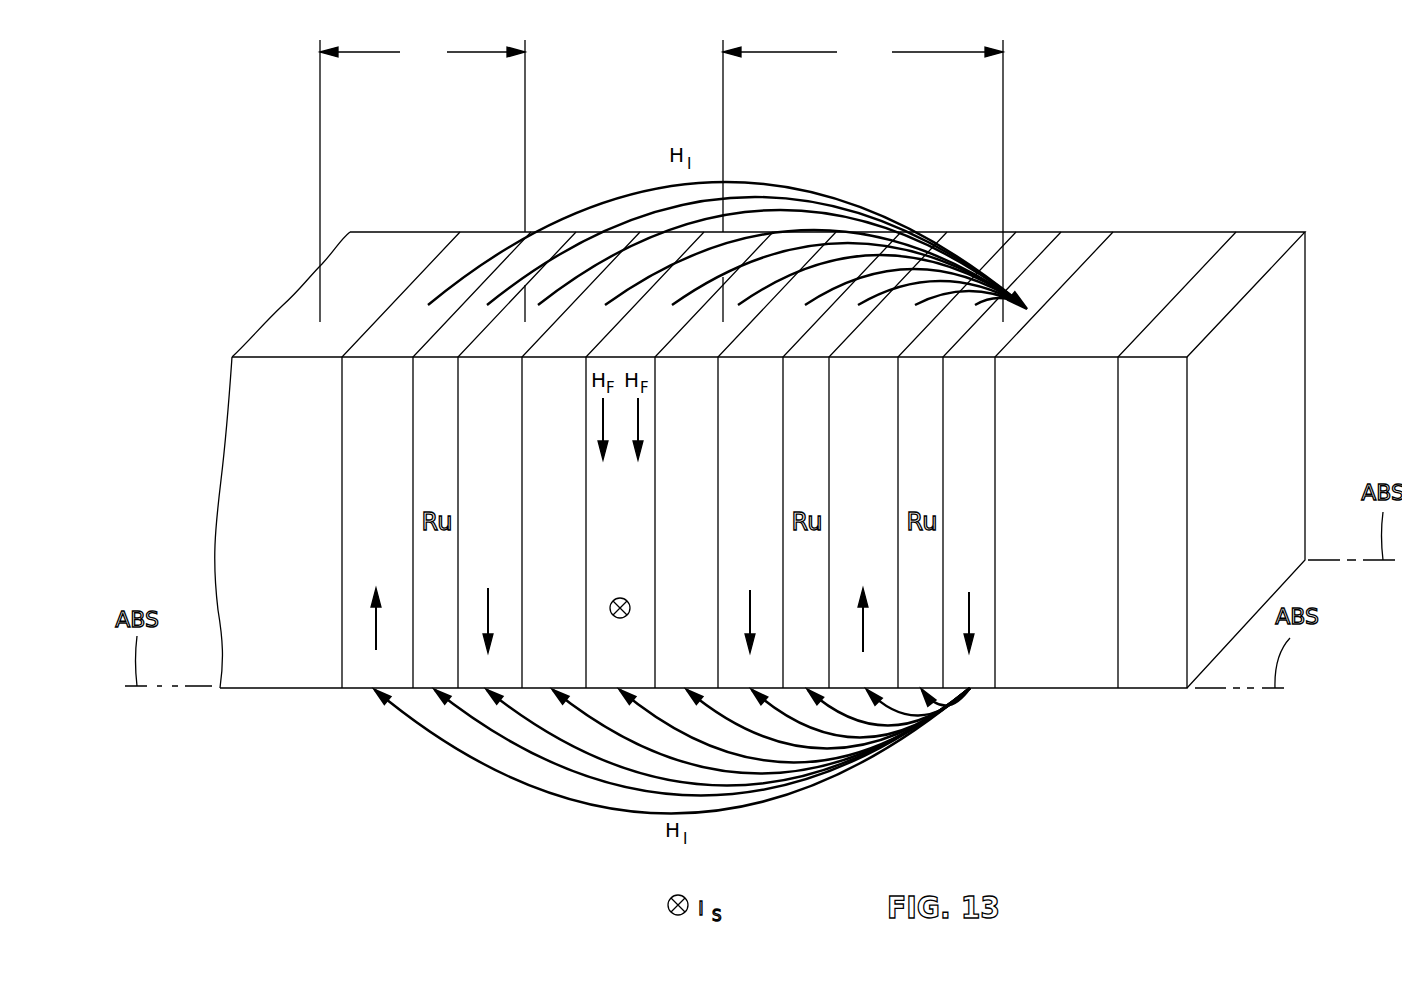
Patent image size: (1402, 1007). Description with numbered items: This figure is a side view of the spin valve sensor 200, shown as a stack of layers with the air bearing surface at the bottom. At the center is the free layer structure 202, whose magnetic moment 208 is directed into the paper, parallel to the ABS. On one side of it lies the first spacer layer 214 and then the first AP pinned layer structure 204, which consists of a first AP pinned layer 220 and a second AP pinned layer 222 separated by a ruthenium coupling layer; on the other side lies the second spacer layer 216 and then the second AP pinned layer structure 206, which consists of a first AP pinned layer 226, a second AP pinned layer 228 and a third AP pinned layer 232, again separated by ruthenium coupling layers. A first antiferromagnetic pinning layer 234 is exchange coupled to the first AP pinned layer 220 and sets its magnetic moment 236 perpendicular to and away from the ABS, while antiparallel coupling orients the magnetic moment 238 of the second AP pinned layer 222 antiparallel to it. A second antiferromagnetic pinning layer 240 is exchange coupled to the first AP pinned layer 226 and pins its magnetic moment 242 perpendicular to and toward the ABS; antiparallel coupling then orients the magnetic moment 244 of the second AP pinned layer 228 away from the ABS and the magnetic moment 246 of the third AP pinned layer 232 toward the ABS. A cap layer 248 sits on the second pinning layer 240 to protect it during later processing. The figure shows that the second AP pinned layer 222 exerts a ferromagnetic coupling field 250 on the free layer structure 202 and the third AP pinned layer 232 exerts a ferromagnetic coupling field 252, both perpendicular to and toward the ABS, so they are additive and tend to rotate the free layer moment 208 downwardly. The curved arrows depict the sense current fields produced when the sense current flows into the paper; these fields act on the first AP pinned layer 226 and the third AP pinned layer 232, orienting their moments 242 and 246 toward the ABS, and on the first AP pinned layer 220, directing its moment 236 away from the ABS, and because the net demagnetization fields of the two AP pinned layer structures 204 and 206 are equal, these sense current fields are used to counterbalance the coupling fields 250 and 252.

The spin valve sensor 200 is at (1052, 173).
The free layer structure 202 is at (645, 460).
The first AP pinned layer structure 204 is at (422, 180).
The second AP pinned layer structure 206 is at (863, 180).
The magnetic moment of the free layer structure 208 is at (620, 618).
The first spacer layer 214 is at (581, 460).
The second spacer layer 216 is at (714, 460).
The first AP pinned layer 220 is at (401, 460).
The second AP pinned layer 222 is at (517, 460).
The first AP pinned layer 226 is at (1002, 460).
The second AP pinned layer 228 is at (888, 460).
The third AP pinned layer 232 is at (777, 460).
The first antiferromagnetic pinning layer 234 is at (282, 460).
The magnetic moment of the first AP pinned layer 236 is at (376, 628).
The magnetic moment of the second AP pinned layer 238 is at (488, 608).
The second antiferromagnetic pinning layer 240 is at (1054, 460).
The magnetic moment of the first AP pinned layer 242 is at (969, 607).
The magnetic moment of the second AP pinned layer 244 is at (861, 630).
The magnetic moment of the third AP pinned layer 246 is at (750, 608).
The cap layer 248 is at (1177, 460).
The ferromagnetic coupling field 250 is at (603, 415).
The ferromagnetic coupling field 252 is at (638, 415).